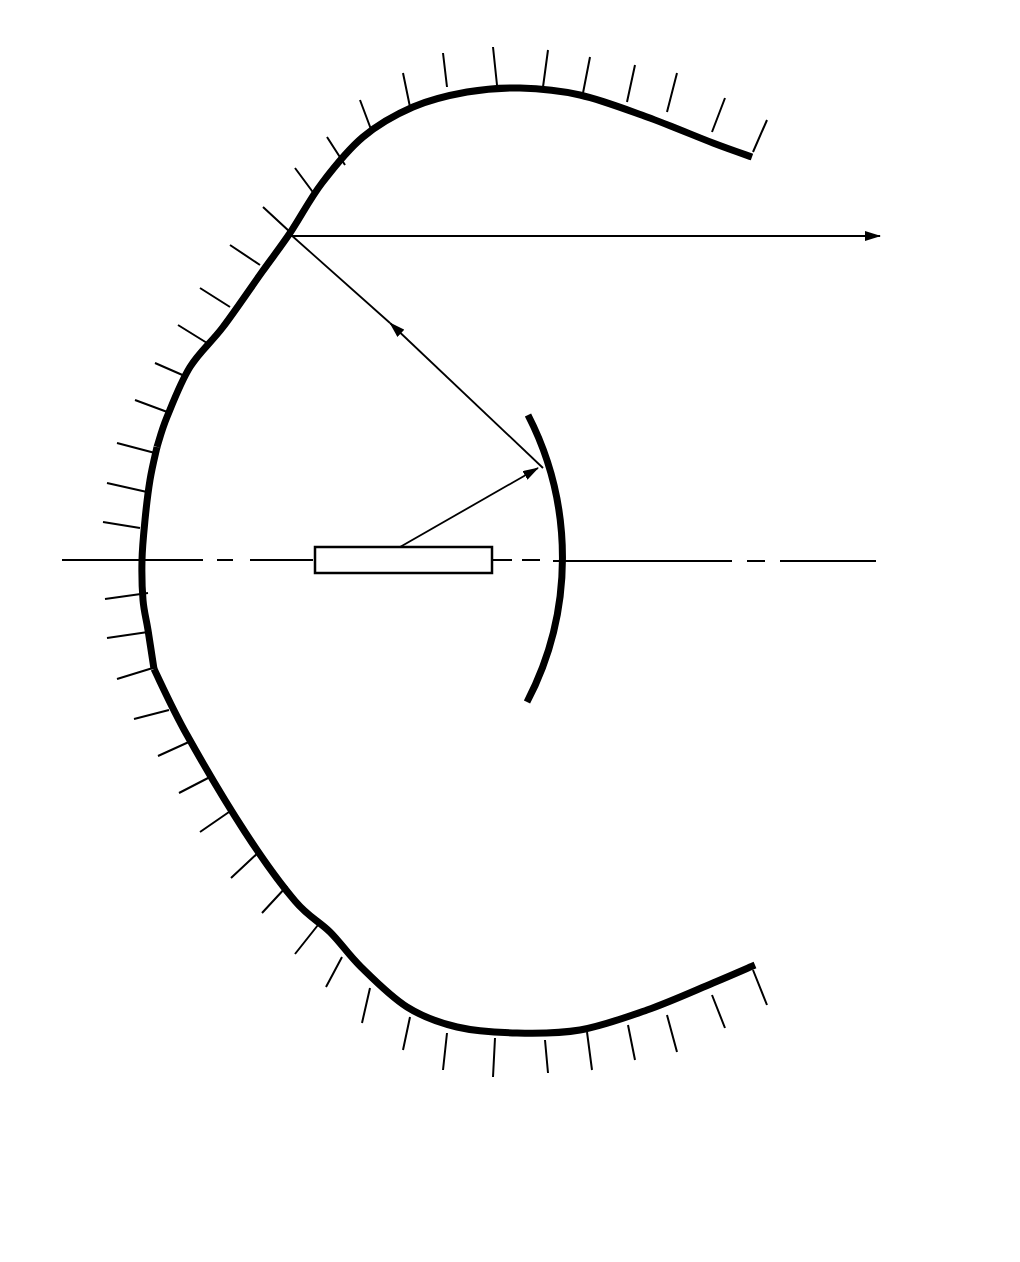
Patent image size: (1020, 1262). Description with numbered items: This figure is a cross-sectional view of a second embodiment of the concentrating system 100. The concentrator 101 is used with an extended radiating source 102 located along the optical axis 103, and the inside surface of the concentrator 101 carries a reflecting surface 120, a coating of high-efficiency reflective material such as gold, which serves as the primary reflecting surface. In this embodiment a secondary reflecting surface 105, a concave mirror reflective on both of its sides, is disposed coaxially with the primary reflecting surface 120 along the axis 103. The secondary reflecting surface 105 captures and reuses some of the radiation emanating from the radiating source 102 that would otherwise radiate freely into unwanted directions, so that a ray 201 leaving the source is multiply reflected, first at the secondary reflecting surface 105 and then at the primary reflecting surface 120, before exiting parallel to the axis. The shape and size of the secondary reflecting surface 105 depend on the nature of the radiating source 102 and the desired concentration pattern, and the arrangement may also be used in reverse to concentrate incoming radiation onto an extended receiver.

The lighting system 100 is at (253, 960).
The concentrator 101 is at (190, 360).
The radiating source 102 is at (365, 575).
The optical axis 103 is at (722, 564).
The secondary reflecting surface 105 is at (532, 703).
The primary reflecting surface 120 is at (187, 721).
The ray 201 is at (430, 358).